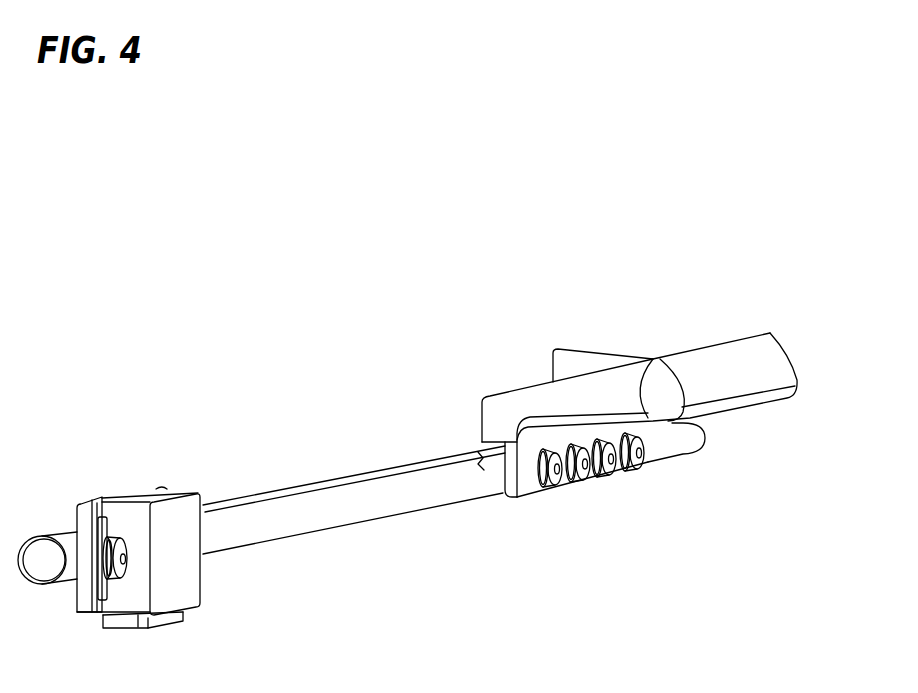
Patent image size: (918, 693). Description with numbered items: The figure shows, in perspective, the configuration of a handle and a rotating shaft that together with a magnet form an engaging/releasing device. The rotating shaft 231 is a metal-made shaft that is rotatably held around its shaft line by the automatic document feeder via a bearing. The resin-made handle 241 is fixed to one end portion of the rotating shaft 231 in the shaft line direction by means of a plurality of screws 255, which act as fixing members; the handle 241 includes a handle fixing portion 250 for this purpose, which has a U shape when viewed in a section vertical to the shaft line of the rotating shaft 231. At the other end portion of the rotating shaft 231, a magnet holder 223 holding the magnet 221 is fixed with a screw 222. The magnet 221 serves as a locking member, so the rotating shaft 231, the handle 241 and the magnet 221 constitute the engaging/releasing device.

The magnet 221 is at (117, 622).
The screw 222 is at (114, 536).
The magnet holder 223 is at (188, 518).
The rotating shaft 231 is at (345, 488).
The handle 241 is at (740, 355).
The handle fixing portion 250 is at (528, 485).
The screws 255 is at (630, 472).